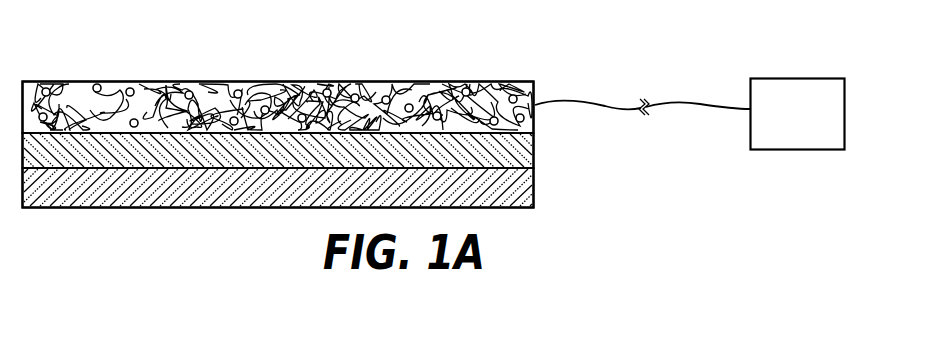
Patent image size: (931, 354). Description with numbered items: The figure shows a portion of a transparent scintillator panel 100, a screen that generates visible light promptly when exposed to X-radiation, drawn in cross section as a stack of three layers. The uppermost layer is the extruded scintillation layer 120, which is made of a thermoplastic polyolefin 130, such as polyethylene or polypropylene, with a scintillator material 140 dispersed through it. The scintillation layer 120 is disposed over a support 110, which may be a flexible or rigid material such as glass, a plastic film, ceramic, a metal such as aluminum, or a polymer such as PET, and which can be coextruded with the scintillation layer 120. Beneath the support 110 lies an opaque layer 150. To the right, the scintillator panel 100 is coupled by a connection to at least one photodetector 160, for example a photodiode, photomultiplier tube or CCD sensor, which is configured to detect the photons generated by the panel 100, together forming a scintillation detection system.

The transparent scintillator panel 100 is at (367, 50).
The support 110 is at (536, 154).
The extruded scintillation layer 120 is at (535, 100).
The thermoplastic polyolefin 130 is at (62, 81).
The scintillator material 140 is at (468, 88).
The opaque layer 150 is at (536, 192).
The photodetector 160 is at (782, 150).